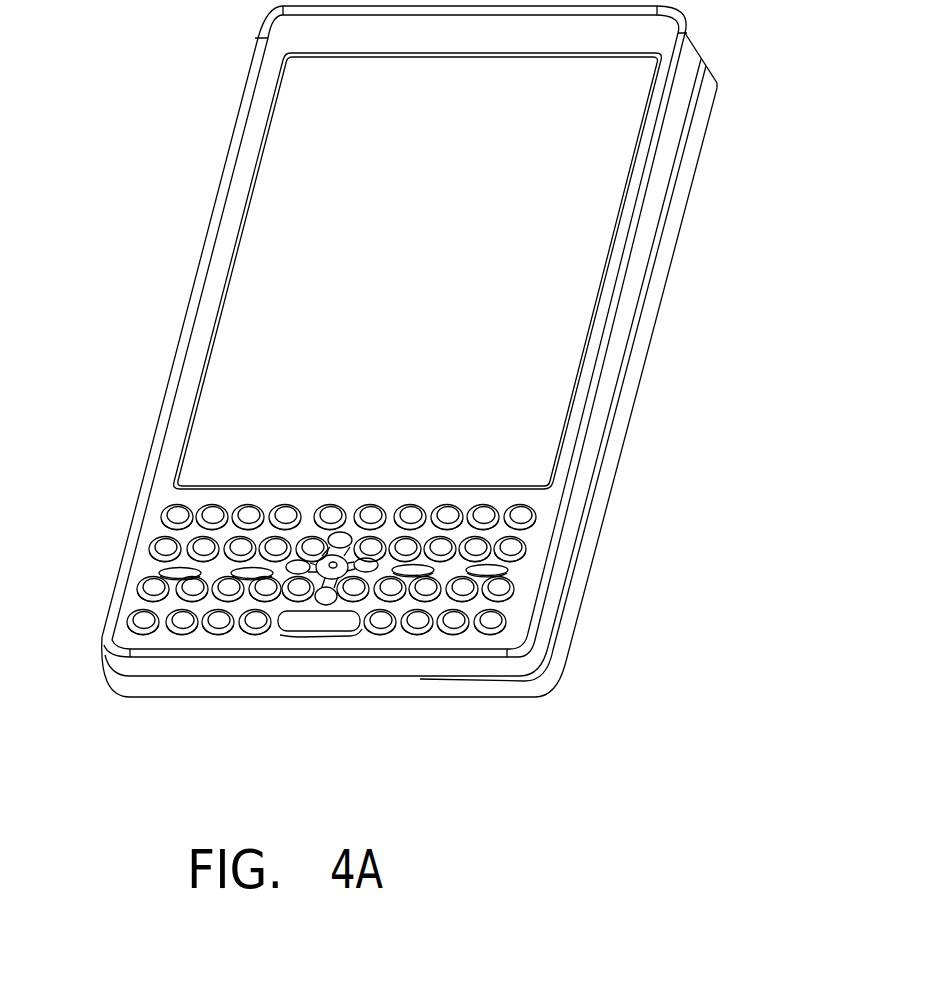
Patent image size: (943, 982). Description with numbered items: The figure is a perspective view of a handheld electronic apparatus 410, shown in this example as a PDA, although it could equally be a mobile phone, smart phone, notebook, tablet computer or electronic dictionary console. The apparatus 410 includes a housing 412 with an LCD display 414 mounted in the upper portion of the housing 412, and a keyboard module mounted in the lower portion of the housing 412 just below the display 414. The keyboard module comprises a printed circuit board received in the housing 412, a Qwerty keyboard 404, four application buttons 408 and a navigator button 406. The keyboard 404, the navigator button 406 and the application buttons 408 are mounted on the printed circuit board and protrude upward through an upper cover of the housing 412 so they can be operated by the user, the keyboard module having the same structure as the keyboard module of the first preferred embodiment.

The Qwerty keyboard 404 is at (140, 618).
The navigator button 406 is at (316, 545).
The application buttons 408 is at (157, 566).
The handheld electronic apparatus 410 is at (323, 772).
The housing 412 is at (640, 300).
The LCD display 414 is at (595, 181).